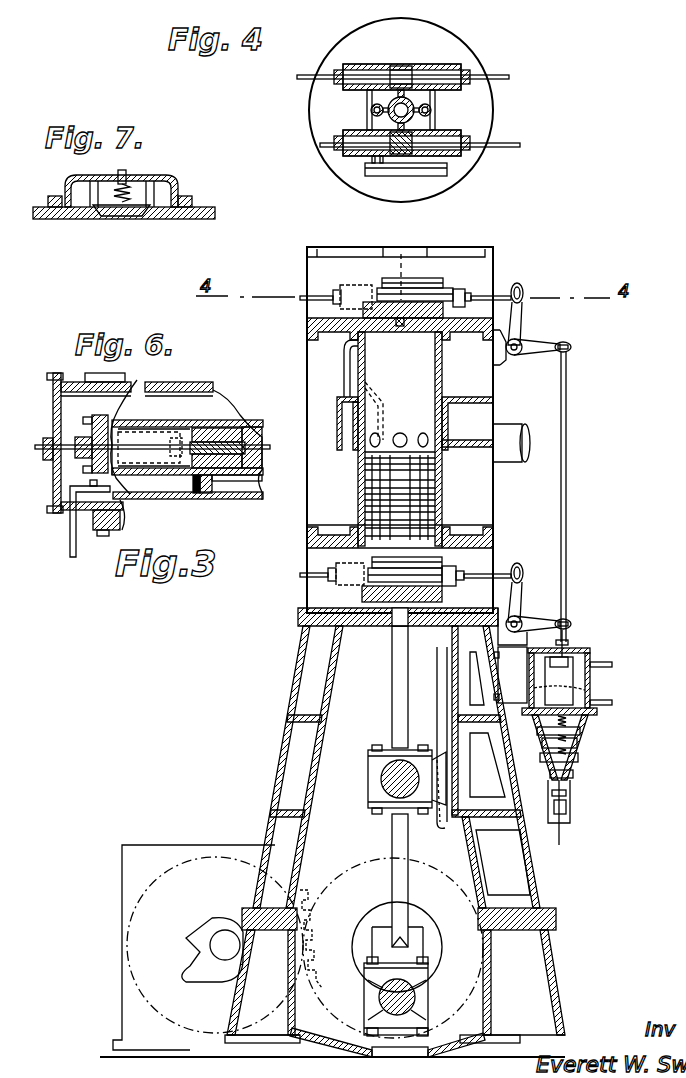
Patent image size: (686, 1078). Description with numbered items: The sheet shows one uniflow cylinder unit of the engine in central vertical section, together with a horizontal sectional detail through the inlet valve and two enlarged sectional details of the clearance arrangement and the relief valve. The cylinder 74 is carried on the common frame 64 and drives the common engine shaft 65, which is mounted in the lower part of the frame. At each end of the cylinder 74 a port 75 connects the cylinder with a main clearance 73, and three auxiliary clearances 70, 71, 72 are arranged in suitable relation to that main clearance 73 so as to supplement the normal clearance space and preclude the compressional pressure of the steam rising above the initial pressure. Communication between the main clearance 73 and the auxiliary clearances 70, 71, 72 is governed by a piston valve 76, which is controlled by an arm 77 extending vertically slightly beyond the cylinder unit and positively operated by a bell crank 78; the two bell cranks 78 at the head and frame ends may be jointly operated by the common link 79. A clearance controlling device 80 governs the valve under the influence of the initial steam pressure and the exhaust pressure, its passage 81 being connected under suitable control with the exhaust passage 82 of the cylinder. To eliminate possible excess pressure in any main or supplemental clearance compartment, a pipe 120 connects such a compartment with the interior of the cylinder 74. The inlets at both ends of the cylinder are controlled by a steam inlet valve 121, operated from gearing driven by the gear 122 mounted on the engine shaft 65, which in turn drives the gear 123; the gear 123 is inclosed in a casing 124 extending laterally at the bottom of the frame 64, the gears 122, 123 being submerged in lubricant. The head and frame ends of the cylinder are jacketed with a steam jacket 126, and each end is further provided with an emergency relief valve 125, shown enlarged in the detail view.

In FIG. 3, the common frame 64 is at (304, 680).
In FIG. 3, the engine shaft 65 is at (415, 999).
In FIG. 6, the auxiliary clearance 70 is at (193, 432).
In FIG. 3, the auxiliary clearance 70 is at (425, 278).
In FIG. 6, the auxiliary clearance 71 is at (180, 434).
In FIG. 3, the auxiliary clearance 71 is at (432, 292).
In FIG. 6, the auxiliary clearance 72 is at (180, 468).
In FIG. 3, the auxiliary clearance 72 is at (440, 300).
In FIG. 6, the main clearance 73 is at (106, 428).
In FIG. 3, the main clearance 73 is at (355, 295).
In FIG. 7, the cylinder 74 is at (205, 219).
In FIG. 6, the cylinder 74 is at (138, 510).
In FIG. 3, the cylinder 74 is at (400, 439).
In FIG. 4, the port 75 is at (412, 140).
In FIG. 6, the port 75 is at (199, 494).
In FIG. 3, the port 75 is at (400, 326).
In FIG. 6, the piston valve 76 is at (214, 424).
In FIG. 3, the piston valve 76 is at (402, 260).
In FIG. 3, the arm 77 is at (512, 290).
In FIG. 3, the bell crank 78 is at (530, 345).
In FIG. 3, the common link 79 is at (567, 500).
In FIG. 3, the clearance controlling device 80 is at (572, 724).
In FIG. 3, the passage 81 is at (604, 704).
In FIG. 3, the exhaust passage 82 is at (530, 432).
In FIG. 6, the pipe 120 is at (72, 542).
In FIG. 3, the pipe 120 is at (340, 352).
In FIG. 4, the steam inlet valve 121 is at (410, 70).
In FIG. 3, the gear 122 is at (362, 870).
In FIG. 3, the gear 123 is at (210, 855).
In FIG. 3, the casing 124 is at (148, 845).
In FIG. 4, the emergency relief valve 125 is at (370, 108).
In FIG. 7, the emergency relief valve 125 is at (120, 218).
In FIG. 4, the steam jacket 126 is at (326, 126).
In FIG. 6, the steam jacket 126 is at (238, 394).
In FIG. 3, the steam jacket 126 is at (325, 388).